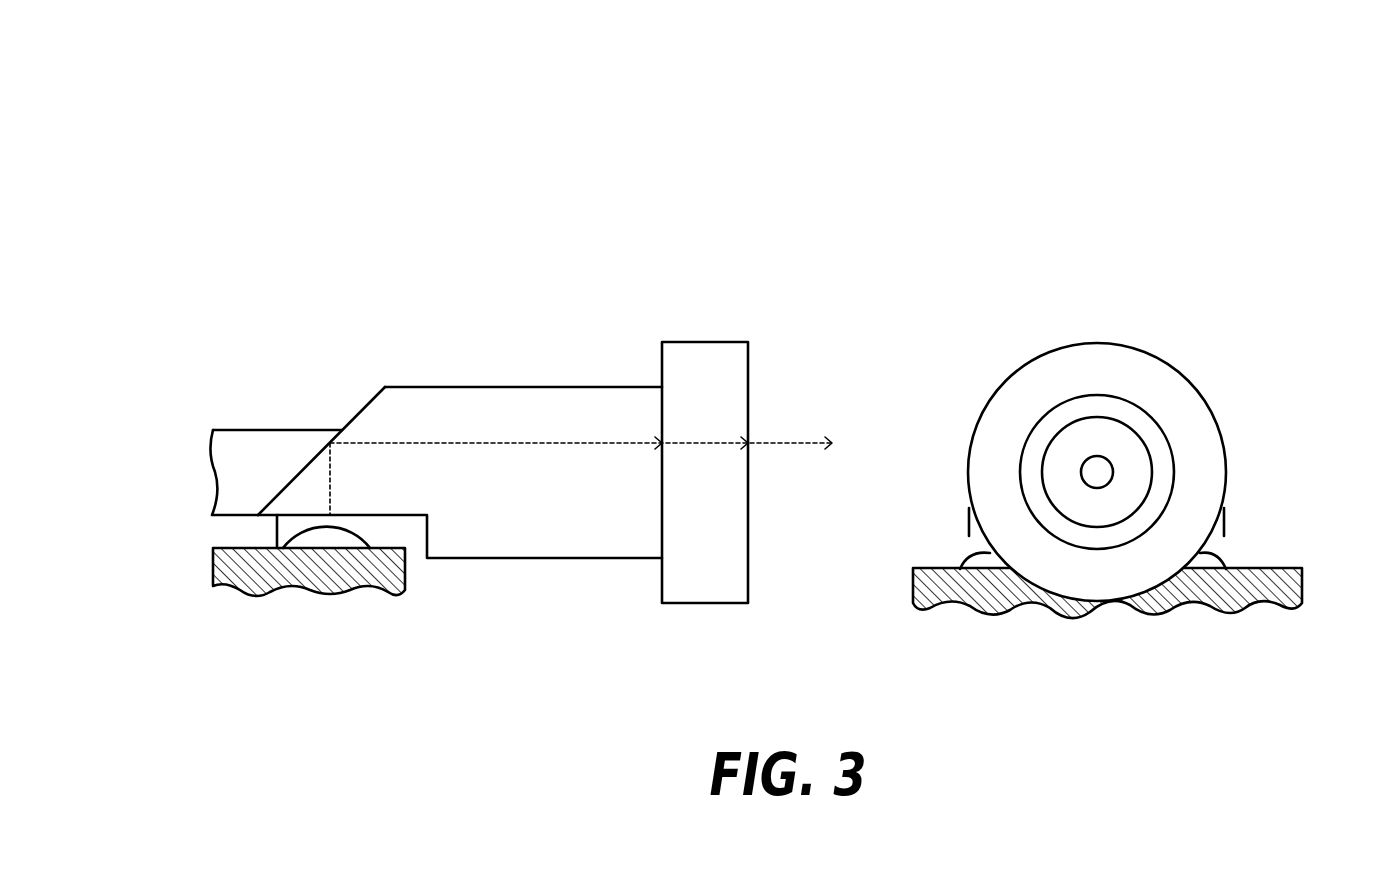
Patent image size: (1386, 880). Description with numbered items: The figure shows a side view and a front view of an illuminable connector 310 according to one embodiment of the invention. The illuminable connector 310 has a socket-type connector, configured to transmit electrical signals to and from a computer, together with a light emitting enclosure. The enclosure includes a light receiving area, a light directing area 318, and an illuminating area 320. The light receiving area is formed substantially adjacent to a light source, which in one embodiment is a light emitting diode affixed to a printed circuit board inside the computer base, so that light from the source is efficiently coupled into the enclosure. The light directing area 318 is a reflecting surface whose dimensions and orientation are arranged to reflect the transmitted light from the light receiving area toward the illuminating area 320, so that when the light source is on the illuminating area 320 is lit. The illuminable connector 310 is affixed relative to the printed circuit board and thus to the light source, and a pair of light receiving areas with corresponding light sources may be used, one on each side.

The illuminable connector 310 is at (448, 252).
The light directing area 318 is at (370, 397).
The illuminating area 320 is at (718, 408).